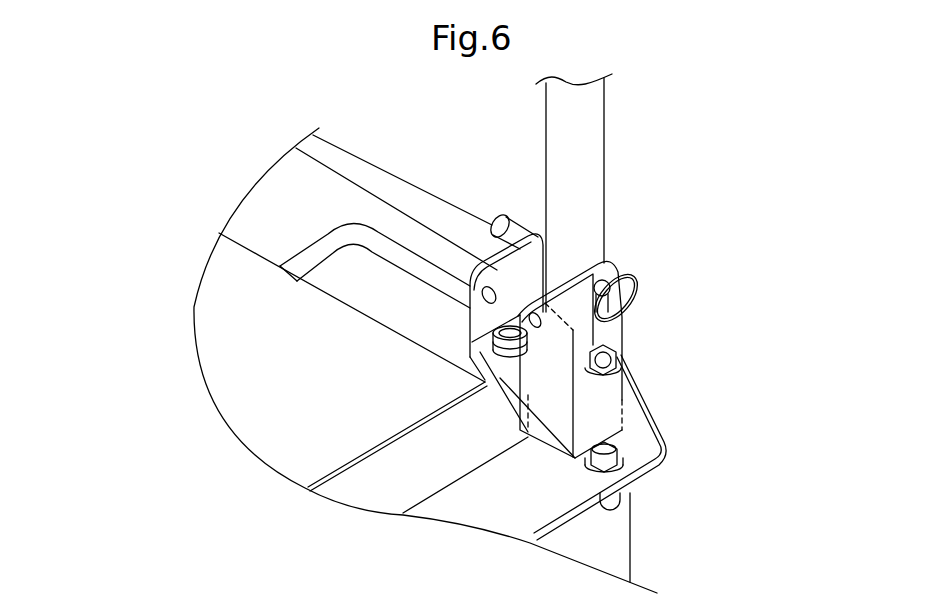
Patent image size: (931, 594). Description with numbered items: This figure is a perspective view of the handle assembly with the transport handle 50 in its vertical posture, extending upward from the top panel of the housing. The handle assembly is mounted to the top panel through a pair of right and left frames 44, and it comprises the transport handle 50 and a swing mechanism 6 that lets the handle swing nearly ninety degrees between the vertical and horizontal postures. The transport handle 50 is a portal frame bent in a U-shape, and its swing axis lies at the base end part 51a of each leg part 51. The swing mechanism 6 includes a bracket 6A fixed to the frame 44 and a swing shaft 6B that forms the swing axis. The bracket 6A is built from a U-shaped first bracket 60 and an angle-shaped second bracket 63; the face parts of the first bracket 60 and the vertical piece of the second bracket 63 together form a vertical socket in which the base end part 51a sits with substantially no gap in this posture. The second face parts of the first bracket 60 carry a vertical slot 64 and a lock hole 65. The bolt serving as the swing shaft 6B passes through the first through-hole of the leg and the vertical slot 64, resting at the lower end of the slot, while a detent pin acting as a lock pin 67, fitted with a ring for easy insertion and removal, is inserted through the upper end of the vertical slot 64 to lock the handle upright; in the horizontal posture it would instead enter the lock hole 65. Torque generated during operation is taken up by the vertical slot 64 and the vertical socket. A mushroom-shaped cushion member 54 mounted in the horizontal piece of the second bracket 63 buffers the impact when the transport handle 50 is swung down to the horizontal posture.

The swing mechanism 6 is at (563, 365).
The bracket 6A is at (666, 260).
The swing shaft 6B is at (628, 361).
The frame 44 is at (452, 457).
The transport handle 50 is at (564, 193).
The leg part 51 is at (607, 157).
The base end part 51a is at (668, 452).
The cushion member 54 is at (476, 300).
The first bracket 60 is at (630, 413).
The second bracket 63 is at (492, 343).
The vertical slot 64 is at (578, 345).
The lock hole 65 is at (508, 358).
The lock pin 67 is at (640, 298).